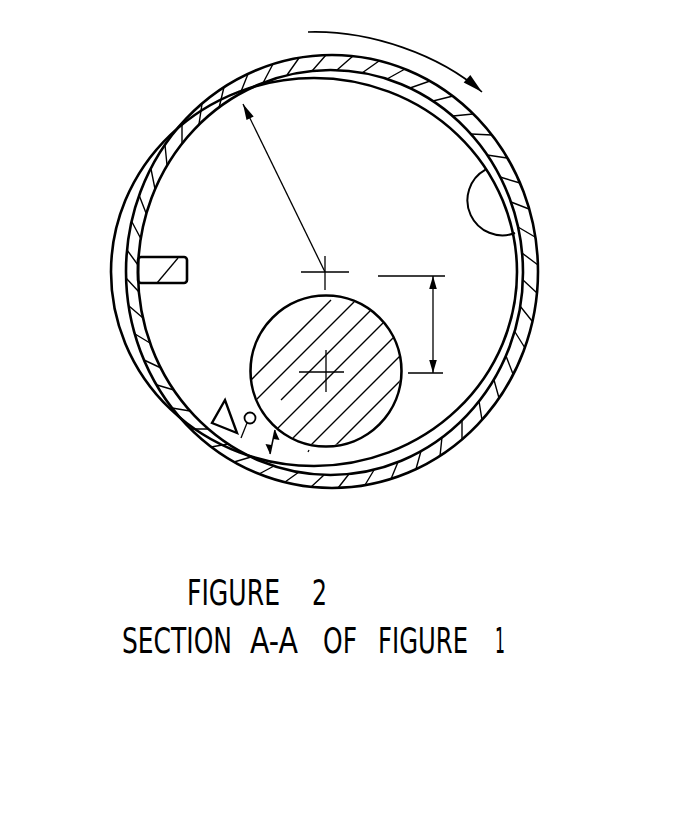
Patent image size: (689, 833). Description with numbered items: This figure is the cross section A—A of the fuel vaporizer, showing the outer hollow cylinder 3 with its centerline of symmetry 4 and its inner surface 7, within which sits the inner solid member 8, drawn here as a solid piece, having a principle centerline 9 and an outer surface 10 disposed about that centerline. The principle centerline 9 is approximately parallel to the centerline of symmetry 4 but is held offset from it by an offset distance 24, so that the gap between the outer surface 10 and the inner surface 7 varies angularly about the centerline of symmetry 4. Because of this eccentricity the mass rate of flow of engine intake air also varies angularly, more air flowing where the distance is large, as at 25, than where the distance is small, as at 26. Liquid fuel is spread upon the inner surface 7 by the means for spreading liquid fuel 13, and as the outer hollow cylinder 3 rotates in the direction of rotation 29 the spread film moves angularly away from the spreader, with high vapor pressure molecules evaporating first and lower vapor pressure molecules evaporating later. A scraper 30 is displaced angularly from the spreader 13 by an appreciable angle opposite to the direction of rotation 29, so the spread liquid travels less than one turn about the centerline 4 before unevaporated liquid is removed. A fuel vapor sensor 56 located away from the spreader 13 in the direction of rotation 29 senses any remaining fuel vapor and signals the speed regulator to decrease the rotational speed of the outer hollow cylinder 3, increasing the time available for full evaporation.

The outer hollow cylinder 3 is at (524, 297).
The centerline of symmetry 4 is at (325, 272).
The inner surface 7 is at (518, 240).
The inner solid member 8 is at (383, 427).
The principle centerline 9 is at (326, 372).
The outer surface 10 is at (308, 452).
The means for spreading liquid fuel 13 is at (153, 272).
The offset distance 24 is at (433, 325).
The large distance region 25 is at (268, 158).
The small distance region 26 is at (274, 450).
The direction of rotation 29 is at (397, 42).
The scraper 30 is at (214, 423).
The fuel vapor sensor 56 is at (242, 438).